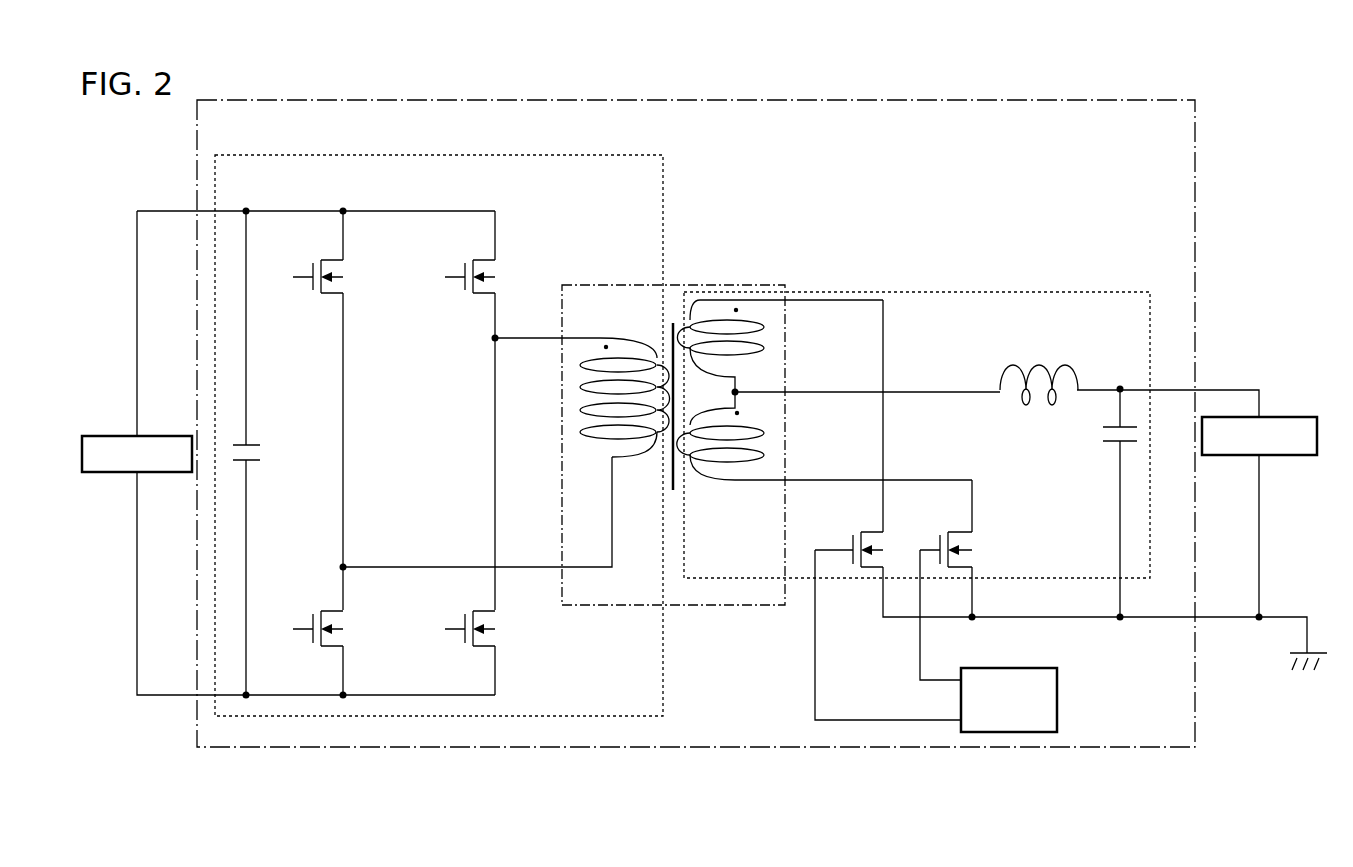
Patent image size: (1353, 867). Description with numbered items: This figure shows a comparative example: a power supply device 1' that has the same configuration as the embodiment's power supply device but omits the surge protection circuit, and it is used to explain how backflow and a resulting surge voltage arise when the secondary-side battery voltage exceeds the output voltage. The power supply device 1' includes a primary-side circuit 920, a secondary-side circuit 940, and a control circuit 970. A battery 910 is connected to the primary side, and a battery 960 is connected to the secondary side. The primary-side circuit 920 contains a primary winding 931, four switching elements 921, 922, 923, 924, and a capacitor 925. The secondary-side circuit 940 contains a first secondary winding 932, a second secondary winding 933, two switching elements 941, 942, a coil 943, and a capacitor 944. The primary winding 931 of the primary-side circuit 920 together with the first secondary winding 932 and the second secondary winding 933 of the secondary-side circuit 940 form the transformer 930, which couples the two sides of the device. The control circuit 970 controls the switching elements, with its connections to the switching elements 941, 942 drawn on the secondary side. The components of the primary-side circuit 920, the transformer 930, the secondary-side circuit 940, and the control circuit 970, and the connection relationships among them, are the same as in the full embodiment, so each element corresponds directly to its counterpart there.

The power supply device 1' is at (734, 423).
The battery 910 is at (115, 434).
The primary-side circuit 920 is at (587, 155).
The switching element 921 is at (335, 276).
The switching element 922 is at (335, 628).
The switching element 923 is at (487, 276).
The switching element 924 is at (487, 628).
The capacitor 925 is at (257, 460).
The transformer 930 is at (630, 285).
The primary winding 931 is at (617, 338).
The first secondary winding 932 is at (730, 355).
The second secondary winding 933 is at (742, 430).
The secondary-side circuit 940 is at (1110, 292).
The switching element 941 is at (915, 538).
The switching element 942 is at (962, 550).
The coil 943 is at (1075, 366).
The capacitor 944 is at (1103, 432).
The battery 960 is at (1292, 417).
The control circuit 970 is at (1077, 681).